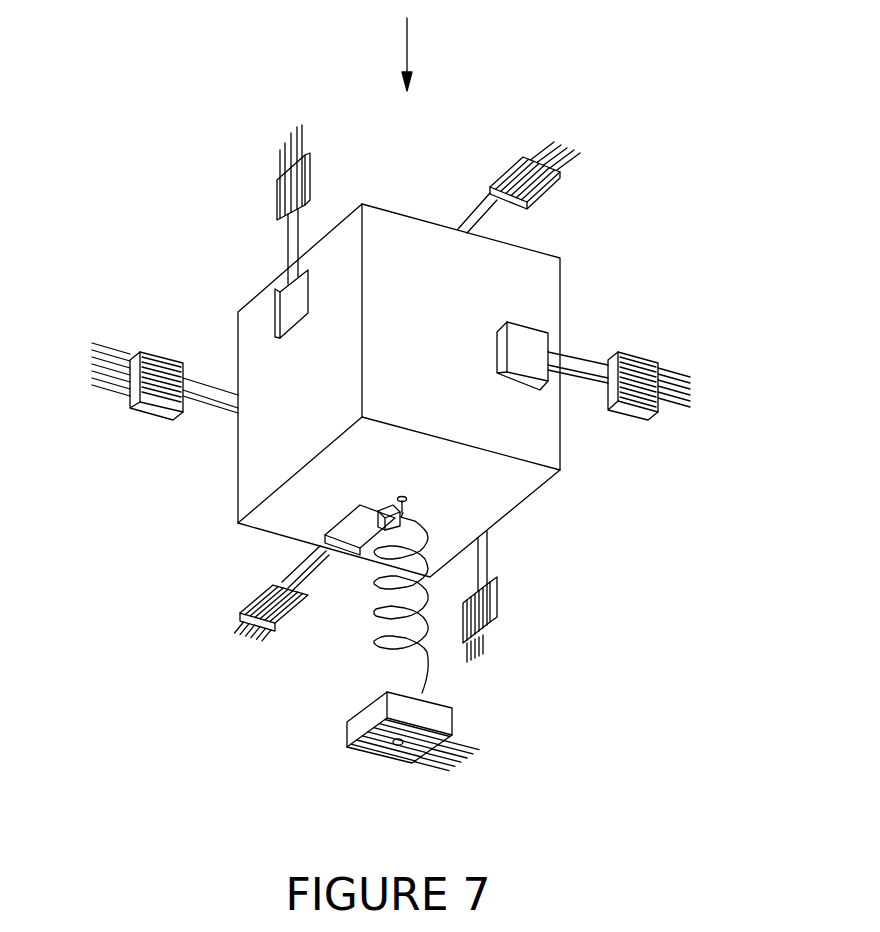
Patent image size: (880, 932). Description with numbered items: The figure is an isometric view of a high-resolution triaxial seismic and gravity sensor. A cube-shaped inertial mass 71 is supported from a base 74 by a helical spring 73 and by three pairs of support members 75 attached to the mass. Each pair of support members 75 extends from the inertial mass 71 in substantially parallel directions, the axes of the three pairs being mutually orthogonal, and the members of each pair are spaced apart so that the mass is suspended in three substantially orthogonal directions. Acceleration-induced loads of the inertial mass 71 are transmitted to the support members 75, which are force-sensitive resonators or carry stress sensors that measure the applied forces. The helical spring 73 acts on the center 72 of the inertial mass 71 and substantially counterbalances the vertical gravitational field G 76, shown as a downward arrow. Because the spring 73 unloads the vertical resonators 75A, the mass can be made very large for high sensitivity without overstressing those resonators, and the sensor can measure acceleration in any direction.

The inertial mass 71 is at (561, 285).
The center of the inertial mass 72 is at (417, 503).
The helical spring 73 is at (428, 656).
The base 74 is at (283, 140).
The support members 75 is at (487, 221).
The vertical resonators 75A is at (283, 279).
The vertical gravitational field G 76 is at (408, 31).